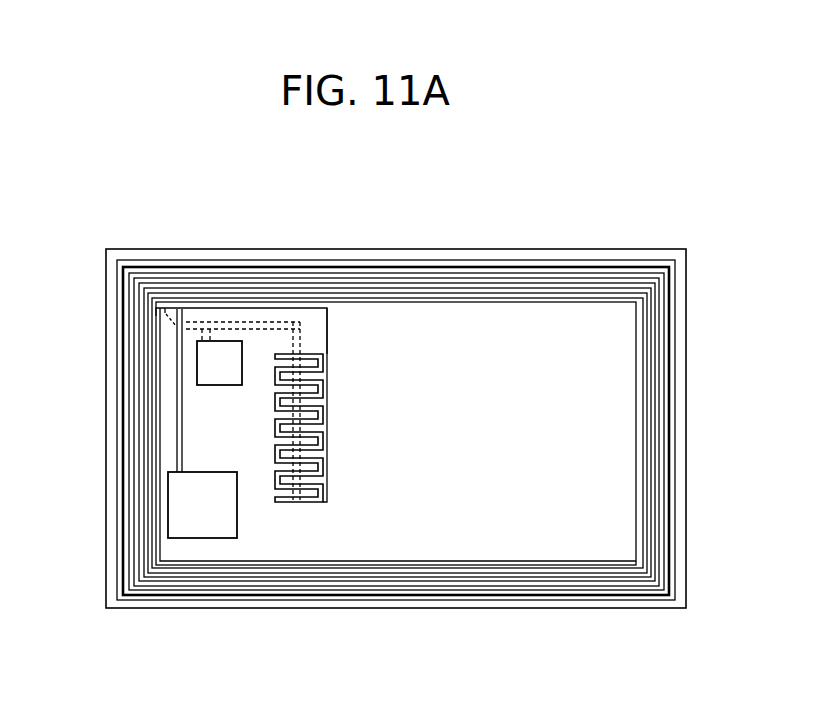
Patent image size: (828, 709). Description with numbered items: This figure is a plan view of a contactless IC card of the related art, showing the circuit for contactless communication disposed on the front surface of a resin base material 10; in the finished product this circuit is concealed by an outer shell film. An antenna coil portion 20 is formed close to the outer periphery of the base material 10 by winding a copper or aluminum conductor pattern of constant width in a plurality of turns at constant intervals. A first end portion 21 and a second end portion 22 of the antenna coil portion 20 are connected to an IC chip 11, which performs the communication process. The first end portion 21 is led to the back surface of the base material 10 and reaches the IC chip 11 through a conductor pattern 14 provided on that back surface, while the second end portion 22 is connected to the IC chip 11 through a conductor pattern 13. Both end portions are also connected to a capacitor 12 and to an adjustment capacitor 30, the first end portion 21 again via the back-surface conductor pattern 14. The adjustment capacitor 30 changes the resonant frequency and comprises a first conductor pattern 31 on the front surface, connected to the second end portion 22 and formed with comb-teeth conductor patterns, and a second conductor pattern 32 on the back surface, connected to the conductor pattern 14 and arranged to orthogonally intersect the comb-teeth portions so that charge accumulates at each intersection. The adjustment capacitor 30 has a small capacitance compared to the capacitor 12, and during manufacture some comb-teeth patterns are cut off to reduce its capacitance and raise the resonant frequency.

The base material 10 is at (613, 609).
The IC chip 11 is at (219, 385).
The capacitor 12 is at (172, 526).
The conductor pattern 13 is at (180, 402).
The conductor pattern 14 is at (166, 317).
The antenna coil portion 20 is at (541, 257).
The first end portion 21 is at (117, 258).
The second end portion 22 is at (233, 336).
The adjustment capacitor 30 is at (329, 428).
The first conductor pattern 31 is at (316, 352).
The second conductor pattern 32 is at (294, 326).